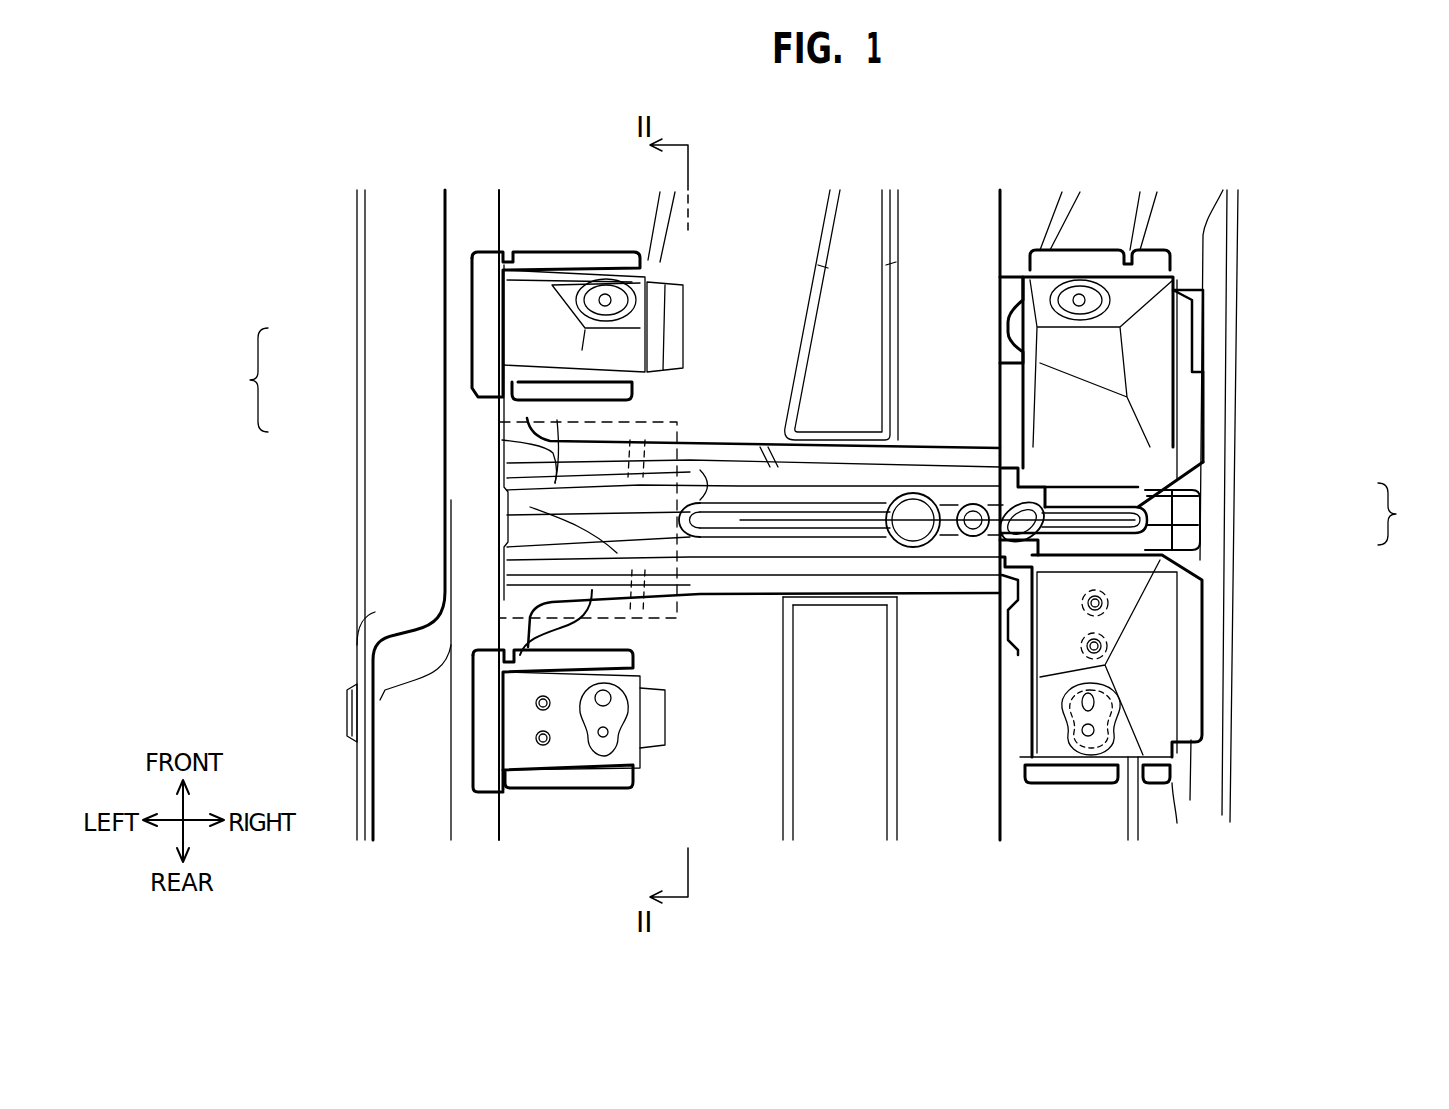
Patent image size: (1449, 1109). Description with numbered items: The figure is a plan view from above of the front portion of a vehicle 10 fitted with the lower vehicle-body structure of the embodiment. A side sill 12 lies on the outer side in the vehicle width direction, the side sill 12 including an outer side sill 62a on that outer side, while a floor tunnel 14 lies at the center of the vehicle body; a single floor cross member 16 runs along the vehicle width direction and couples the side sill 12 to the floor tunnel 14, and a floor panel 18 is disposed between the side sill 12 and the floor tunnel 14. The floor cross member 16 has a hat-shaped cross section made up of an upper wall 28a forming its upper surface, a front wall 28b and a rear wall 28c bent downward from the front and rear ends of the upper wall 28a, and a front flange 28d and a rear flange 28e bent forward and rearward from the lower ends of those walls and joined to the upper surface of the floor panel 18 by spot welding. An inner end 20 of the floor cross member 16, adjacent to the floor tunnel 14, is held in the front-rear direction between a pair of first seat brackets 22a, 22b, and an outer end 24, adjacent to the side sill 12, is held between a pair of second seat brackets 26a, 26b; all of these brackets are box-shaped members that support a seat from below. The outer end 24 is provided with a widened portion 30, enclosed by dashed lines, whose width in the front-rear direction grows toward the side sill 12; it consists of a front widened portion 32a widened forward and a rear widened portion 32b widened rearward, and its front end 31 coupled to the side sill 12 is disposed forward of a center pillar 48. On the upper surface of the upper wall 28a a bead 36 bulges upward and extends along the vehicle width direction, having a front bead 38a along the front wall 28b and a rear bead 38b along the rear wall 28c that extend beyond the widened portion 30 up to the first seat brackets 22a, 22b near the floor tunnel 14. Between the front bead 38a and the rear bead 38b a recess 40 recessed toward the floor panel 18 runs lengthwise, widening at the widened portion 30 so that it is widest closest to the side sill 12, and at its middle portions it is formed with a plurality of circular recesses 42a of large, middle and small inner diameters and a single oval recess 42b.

The vehicle 10 is at (1296, 146).
The side sill 12 is at (322, 470).
The floor tunnel 14 is at (1260, 452).
The floor cross member 16 is at (776, 612).
The floor panel 18 is at (737, 800).
The inner end 20 is at (1203, 540).
The first seat bracket 22a is at (1232, 392).
The first seat bracket 22b is at (1228, 658).
The outer end 24 is at (525, 535).
The second seat bracket 26a is at (581, 236).
The second seat bracket 26b is at (583, 808).
The upper wall 28a is at (812, 445).
The front wall 28b is at (690, 452).
The rear wall 28c is at (700, 595).
The front flange 28d is at (755, 445).
The rear flange 28e is at (712, 680).
The widened portion 30 is at (658, 420).
The front end 31 is at (540, 435).
The front widened portion 32a is at (588, 445).
The rear widened portion 32b is at (592, 585).
The bead 36 is at (821, 436).
The front bead 38a is at (558, 470).
The rear bead 38b is at (520, 510).
The recess 40 is at (528, 525).
The circular recess 42a is at (913, 493).
The oval recess 42b is at (1018, 515).
The center pillar 48 is at (336, 838).
The outer side sill 62a is at (360, 628).